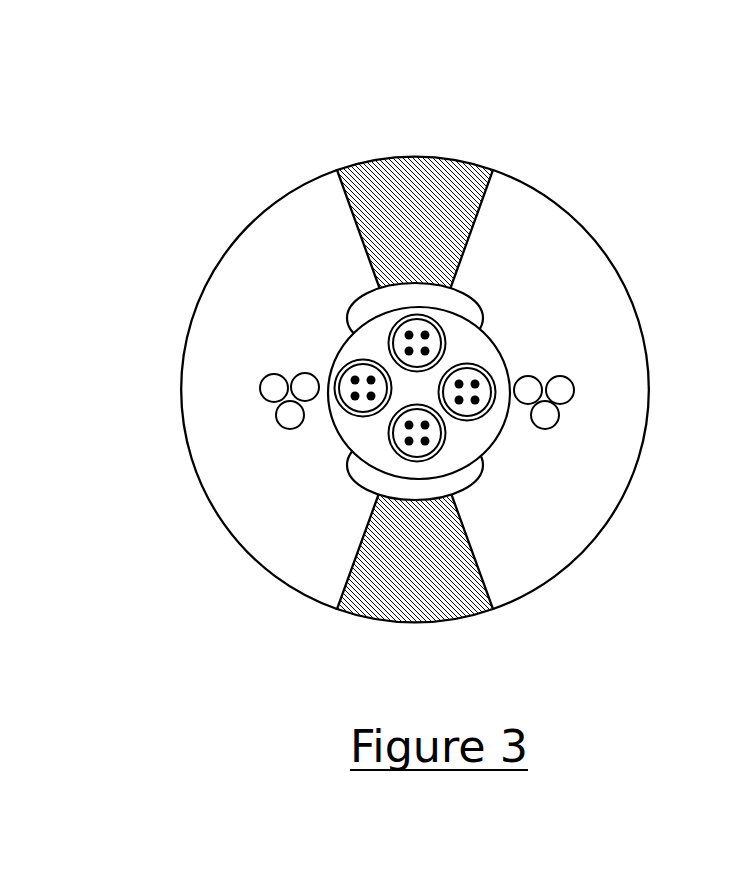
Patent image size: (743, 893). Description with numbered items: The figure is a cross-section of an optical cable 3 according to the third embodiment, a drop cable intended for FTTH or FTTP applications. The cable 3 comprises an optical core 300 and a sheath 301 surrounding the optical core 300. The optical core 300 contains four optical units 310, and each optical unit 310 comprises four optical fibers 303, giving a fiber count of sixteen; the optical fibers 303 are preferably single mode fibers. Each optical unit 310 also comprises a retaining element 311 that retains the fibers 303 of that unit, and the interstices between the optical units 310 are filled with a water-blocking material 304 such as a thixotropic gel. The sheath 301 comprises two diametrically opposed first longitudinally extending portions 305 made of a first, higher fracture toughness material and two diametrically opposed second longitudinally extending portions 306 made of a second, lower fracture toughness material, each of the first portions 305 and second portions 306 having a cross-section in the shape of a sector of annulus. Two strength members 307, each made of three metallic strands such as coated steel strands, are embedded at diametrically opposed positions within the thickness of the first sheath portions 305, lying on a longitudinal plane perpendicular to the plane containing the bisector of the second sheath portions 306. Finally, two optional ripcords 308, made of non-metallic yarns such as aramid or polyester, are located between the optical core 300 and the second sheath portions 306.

The optical cable 3 is at (268, 108).
The optical core 300 is at (330, 333).
The sheath 301 is at (533, 175).
The optical fibers 303 is at (478, 404).
The water-blocking material 304 is at (348, 430).
The first longitudinally extending portions 305 is at (195, 317).
The second longitudinally extending portions 306 is at (422, 155).
The strength members 307 is at (255, 407).
The ripcords 308 is at (355, 298).
The optical units 310 is at (485, 363).
The retaining element 311 is at (480, 407).